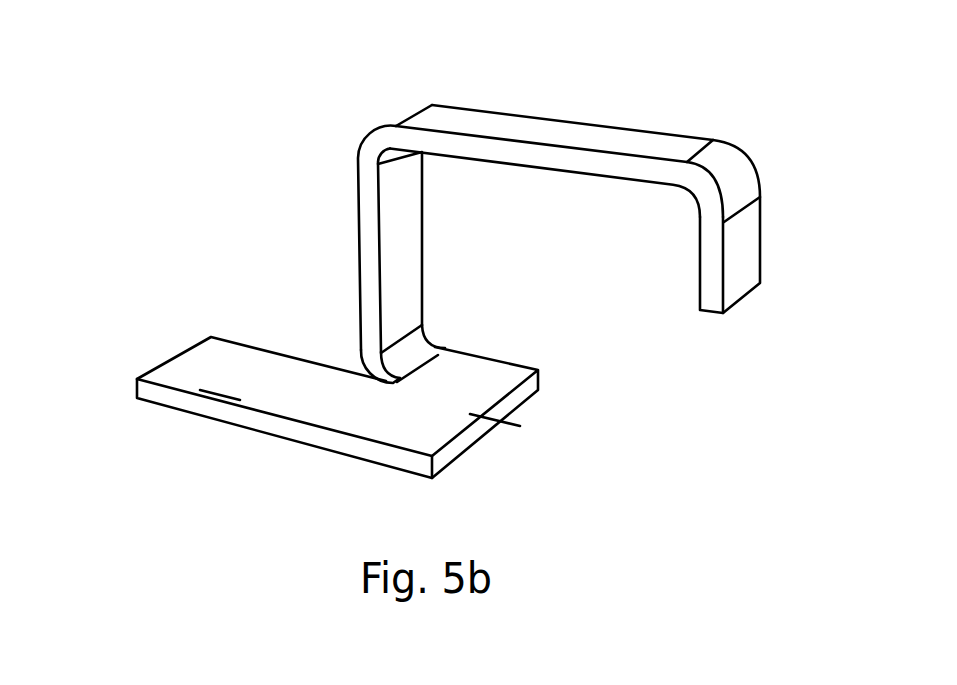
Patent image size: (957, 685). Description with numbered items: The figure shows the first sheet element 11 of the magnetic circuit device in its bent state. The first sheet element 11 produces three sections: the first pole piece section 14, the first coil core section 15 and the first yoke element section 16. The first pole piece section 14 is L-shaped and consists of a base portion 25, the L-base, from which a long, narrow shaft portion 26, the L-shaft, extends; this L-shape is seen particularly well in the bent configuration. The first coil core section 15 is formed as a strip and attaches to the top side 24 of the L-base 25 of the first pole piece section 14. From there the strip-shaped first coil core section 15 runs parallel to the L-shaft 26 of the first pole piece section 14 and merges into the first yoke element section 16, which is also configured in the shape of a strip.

The first sheet element 11 is at (100, 60).
The first pole piece section 14 is at (360, 415).
The first coil core section 15 is at (390, 255).
The first yoke element section 16 is at (618, 137).
The top side 24 is at (440, 352).
The base portion 25 is at (467, 413).
The shaft portion 26 is at (230, 382).